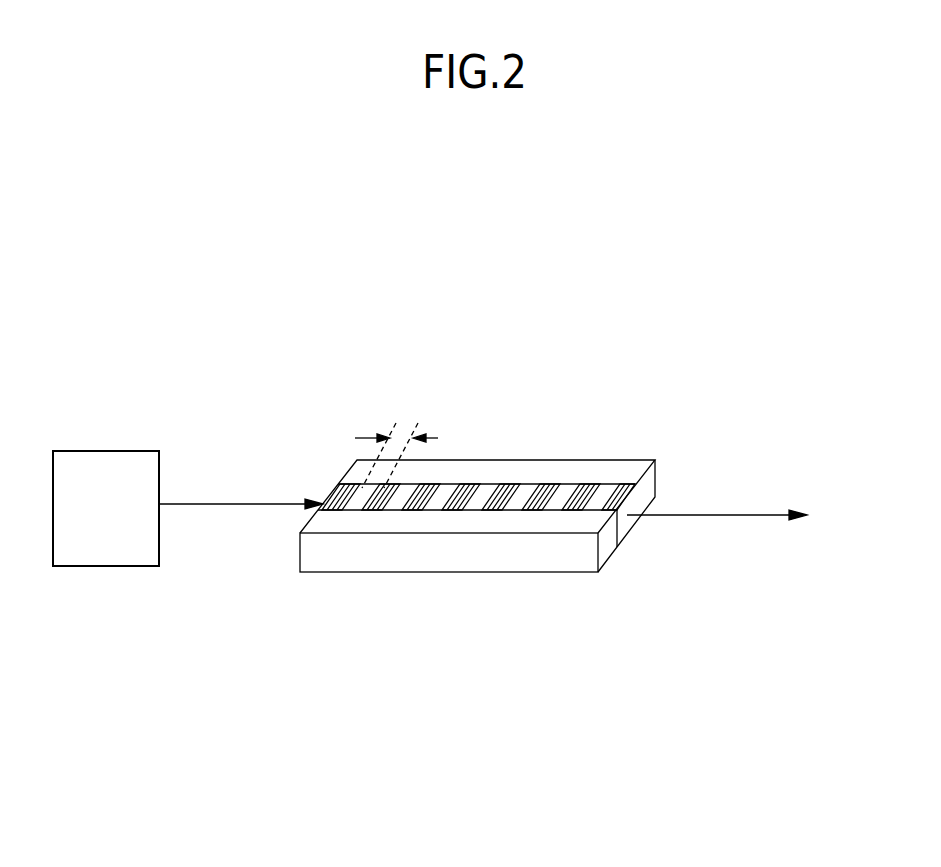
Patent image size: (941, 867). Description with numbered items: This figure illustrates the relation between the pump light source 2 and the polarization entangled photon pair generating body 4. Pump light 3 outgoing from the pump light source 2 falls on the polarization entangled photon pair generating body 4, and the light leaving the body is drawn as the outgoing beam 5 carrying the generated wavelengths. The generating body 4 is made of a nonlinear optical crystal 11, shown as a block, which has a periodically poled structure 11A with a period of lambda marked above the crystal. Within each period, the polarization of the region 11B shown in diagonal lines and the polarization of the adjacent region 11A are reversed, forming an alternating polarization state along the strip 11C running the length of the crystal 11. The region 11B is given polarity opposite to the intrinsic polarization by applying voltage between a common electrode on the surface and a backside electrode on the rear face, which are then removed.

The pump light source 2 is at (106, 450).
The pump light 3 is at (228, 507).
The polarization entangled photon pair generating body 4 is at (477, 495).
The output light 5 is at (680, 518).
The nonlinear optical crystal 11 is at (505, 562).
The periodically poled structure 11A is at (380, 511).
The region shown in diagonal lines 11B is at (388, 510).
The optical waveguide 11C is at (352, 497).